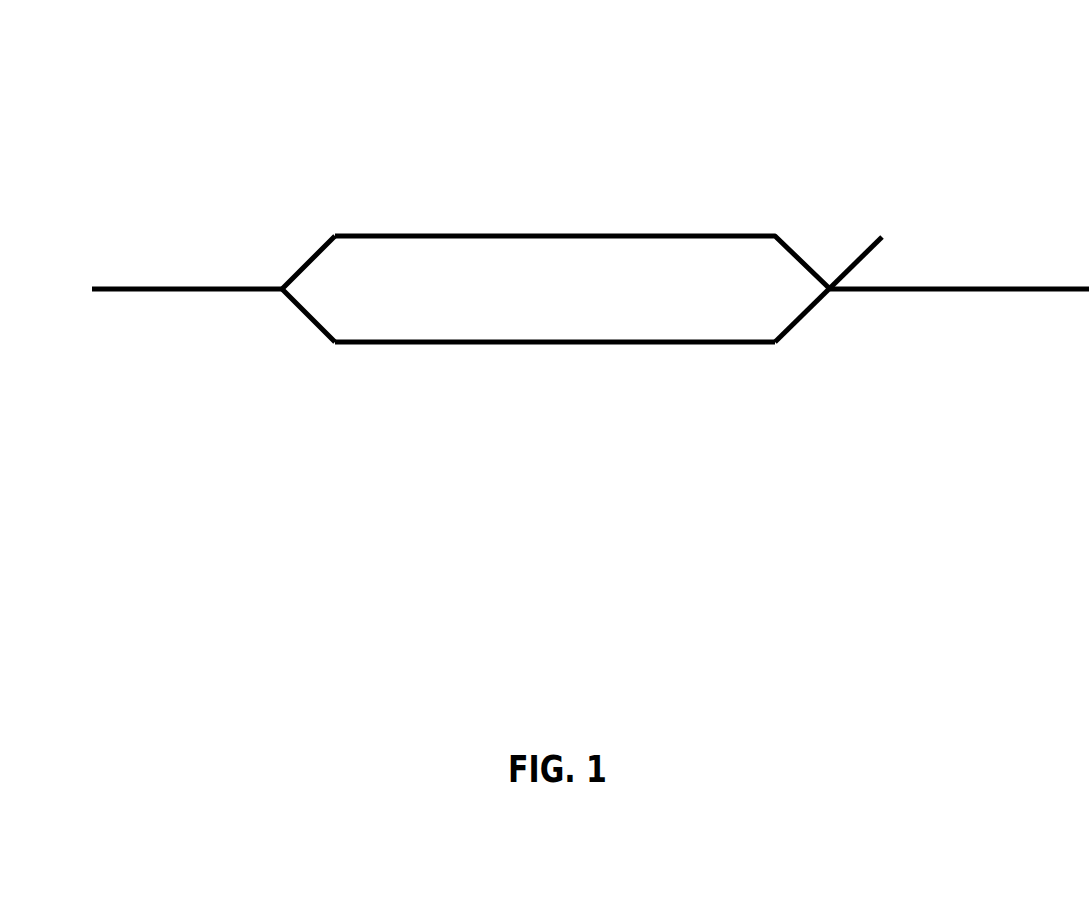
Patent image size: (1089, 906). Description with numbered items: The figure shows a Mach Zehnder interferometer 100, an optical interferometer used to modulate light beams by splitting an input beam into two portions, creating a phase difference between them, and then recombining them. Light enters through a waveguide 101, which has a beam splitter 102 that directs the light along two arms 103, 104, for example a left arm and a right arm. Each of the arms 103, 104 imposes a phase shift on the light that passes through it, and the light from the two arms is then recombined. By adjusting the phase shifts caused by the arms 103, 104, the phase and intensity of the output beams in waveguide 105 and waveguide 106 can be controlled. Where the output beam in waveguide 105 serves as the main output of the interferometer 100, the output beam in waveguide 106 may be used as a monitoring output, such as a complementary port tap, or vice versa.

The Mach Zehnder interferometer 100 is at (350, 158).
The waveguide 101 is at (150, 291).
The beam splitter 102 is at (275, 291).
The arm 103 is at (470, 236).
The arm 104 is at (593, 340).
The waveguide 105 is at (1022, 291).
The waveguide 106 is at (858, 243).